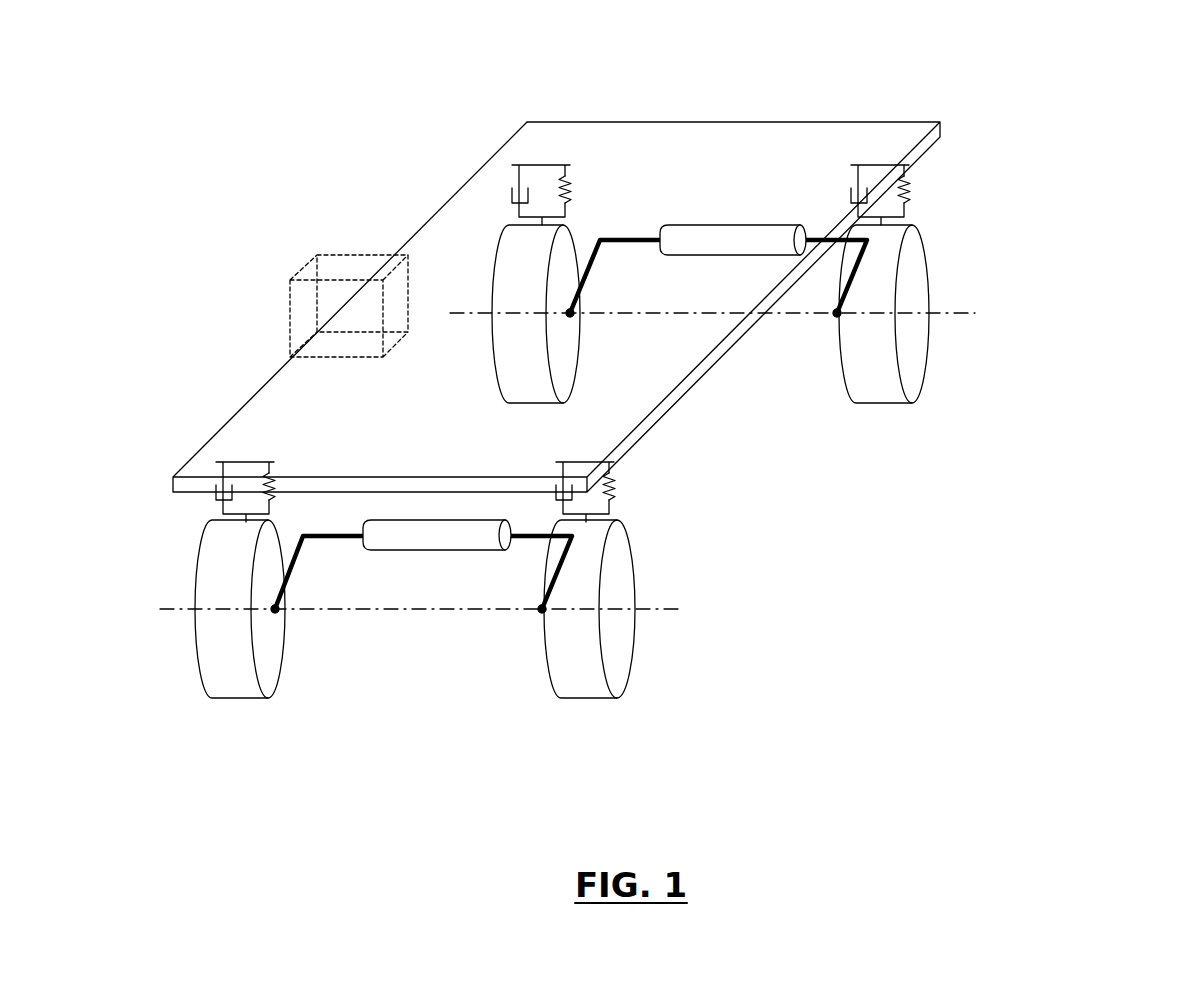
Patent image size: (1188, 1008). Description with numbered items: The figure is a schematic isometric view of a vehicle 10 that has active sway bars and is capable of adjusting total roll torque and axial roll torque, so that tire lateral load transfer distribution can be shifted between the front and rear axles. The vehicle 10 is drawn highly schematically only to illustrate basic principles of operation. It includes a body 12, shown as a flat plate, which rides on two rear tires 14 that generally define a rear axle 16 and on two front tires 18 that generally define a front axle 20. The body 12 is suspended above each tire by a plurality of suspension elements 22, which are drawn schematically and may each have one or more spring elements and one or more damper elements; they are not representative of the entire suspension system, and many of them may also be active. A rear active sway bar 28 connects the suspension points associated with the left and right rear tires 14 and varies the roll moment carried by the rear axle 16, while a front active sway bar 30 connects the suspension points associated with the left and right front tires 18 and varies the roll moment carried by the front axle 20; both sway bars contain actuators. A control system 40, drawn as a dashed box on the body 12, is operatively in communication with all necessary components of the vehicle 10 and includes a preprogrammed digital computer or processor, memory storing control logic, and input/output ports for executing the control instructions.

The vehicle 10 is at (1088, 121).
The body 12 is at (673, 120).
The rear tires 14 is at (528, 390).
The rear axle 16 is at (646, 316).
The front tires 18 is at (232, 683).
The front axle 20 is at (400, 610).
The suspension elements 22 is at (520, 211).
The rear active sway bar 28 is at (757, 237).
The front active sway bar 30 is at (408, 533).
The control system 40 is at (342, 252).